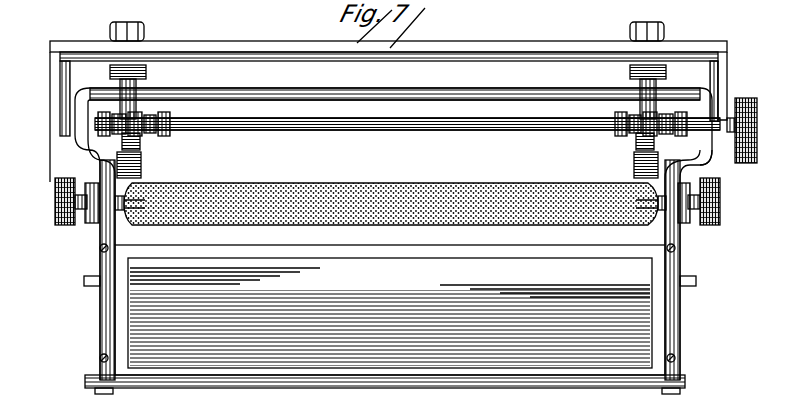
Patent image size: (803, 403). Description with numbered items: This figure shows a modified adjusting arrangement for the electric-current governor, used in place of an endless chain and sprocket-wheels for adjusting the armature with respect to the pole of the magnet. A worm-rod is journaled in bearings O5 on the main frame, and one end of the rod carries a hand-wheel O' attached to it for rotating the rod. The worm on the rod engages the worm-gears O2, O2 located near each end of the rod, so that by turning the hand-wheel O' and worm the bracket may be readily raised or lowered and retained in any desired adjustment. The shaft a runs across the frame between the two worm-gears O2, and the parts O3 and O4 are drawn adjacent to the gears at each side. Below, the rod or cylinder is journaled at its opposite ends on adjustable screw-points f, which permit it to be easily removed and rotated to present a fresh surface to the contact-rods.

The bearings O5 is at (65, 125).
The adjusting stem O3 is at (138, 110).
The shaft a is at (407, 132).
The worm-gears O2 is at (141, 146).
The bearing block O4 is at (141, 165).
The hand-wheel O' is at (750, 130).
The adjustable screw-points f is at (388, 201).